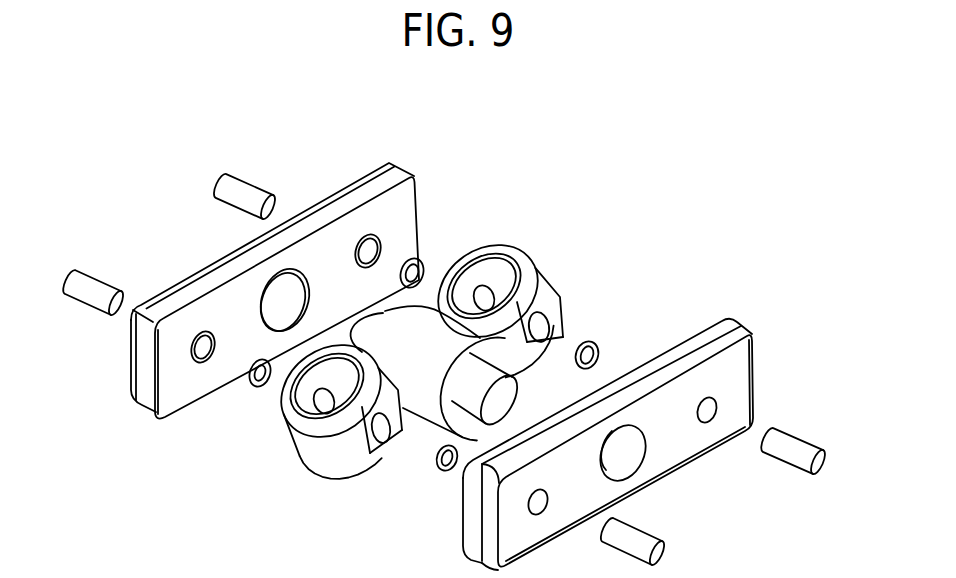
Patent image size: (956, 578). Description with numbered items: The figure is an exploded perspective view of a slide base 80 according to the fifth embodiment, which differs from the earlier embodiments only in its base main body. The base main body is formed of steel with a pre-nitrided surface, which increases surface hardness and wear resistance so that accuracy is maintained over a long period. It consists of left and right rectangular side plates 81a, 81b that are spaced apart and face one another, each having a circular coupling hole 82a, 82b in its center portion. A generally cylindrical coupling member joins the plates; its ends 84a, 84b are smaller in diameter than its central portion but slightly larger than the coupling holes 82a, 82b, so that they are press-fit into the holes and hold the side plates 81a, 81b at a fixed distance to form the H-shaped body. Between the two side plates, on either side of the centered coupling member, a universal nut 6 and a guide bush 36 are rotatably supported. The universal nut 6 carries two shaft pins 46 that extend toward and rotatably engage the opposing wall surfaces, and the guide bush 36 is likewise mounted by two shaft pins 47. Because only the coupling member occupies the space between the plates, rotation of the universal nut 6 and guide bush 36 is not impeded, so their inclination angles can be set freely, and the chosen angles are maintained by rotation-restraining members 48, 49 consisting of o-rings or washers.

The slide base 80 is at (418, 161).
The left side plate 81a is at (353, 193).
The right side plate 81b is at (737, 372).
The coupling hole 82a is at (282, 297).
The coupling hole 82b is at (620, 468).
The universal nut 6 is at (486, 330).
The guide bush 36 is at (332, 462).
The end of coupling member 84a is at (381, 314).
The end of coupling member 84b is at (570, 343).
The shaft pins 46 is at (92, 288).
The shaft pins 47 is at (240, 186).
The rotation-restraining member 48 is at (254, 388).
The rotation-restraining member 49 is at (423, 258).